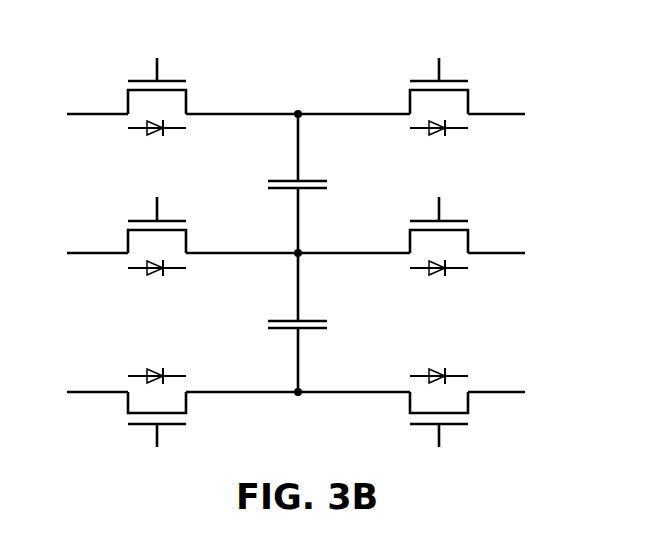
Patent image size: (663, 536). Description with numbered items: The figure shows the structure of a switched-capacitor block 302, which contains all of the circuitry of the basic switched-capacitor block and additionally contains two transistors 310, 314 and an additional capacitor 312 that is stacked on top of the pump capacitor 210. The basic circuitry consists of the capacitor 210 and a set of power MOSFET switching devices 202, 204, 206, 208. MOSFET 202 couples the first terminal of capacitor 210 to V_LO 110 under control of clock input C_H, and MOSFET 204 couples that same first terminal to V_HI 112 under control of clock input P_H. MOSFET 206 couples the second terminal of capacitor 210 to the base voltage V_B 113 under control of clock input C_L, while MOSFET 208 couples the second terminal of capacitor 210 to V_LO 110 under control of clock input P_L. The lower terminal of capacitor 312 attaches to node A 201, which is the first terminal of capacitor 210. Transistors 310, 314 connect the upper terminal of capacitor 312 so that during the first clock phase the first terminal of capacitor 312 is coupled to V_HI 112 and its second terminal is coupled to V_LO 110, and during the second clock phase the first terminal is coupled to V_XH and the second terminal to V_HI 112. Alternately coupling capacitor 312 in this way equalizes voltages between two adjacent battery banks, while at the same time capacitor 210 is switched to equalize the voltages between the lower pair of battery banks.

The switched-capacitor block 302 is at (279, 76).
The transistor 310 is at (348, 85).
The transistor 314 is at (439, 84).
The MOSFET 202 is at (157, 225).
The MOSFET 204 is at (439, 225).
The MOSFET 206 is at (157, 421).
The MOSFET 208 is at (439, 421).
The capacitor 312 is at (280, 184).
The capacitor 210 is at (280, 324).
The node A 201 is at (299, 250).
The V_HI 112 is at (297, 183).
The V_LO 110 is at (299, 323).
The V_B 113 is at (80, 387).